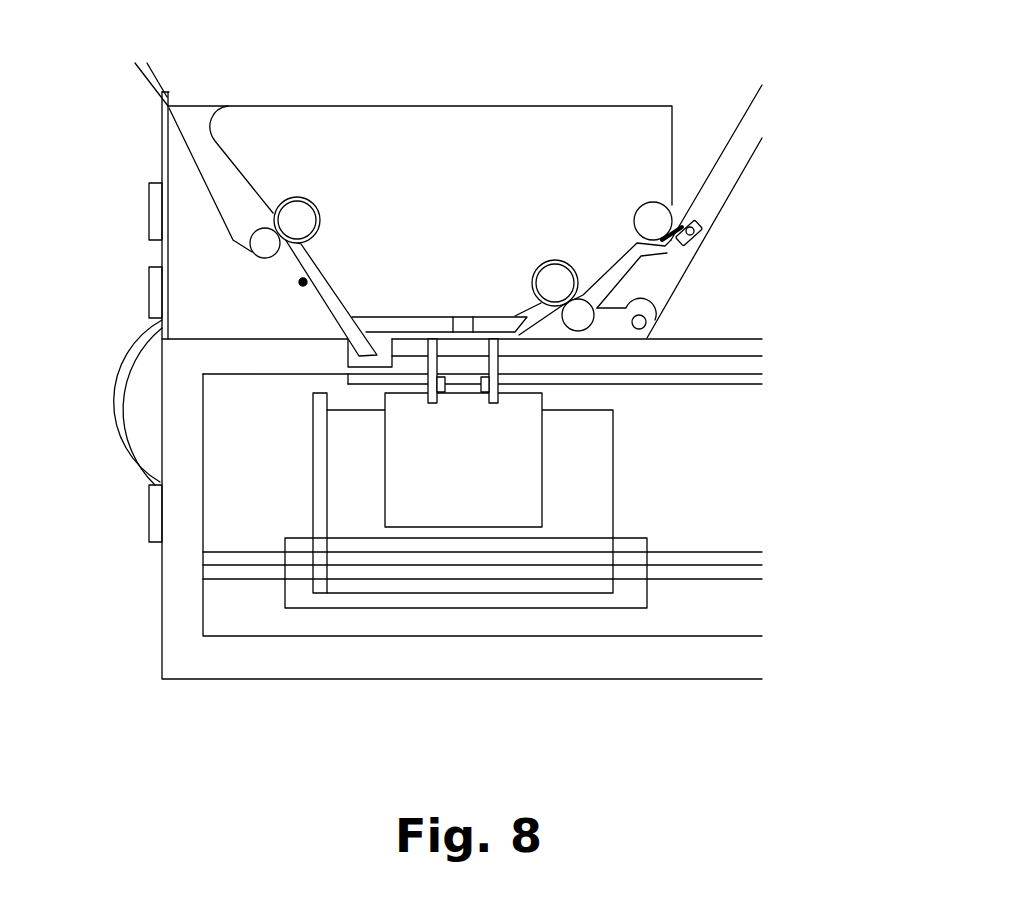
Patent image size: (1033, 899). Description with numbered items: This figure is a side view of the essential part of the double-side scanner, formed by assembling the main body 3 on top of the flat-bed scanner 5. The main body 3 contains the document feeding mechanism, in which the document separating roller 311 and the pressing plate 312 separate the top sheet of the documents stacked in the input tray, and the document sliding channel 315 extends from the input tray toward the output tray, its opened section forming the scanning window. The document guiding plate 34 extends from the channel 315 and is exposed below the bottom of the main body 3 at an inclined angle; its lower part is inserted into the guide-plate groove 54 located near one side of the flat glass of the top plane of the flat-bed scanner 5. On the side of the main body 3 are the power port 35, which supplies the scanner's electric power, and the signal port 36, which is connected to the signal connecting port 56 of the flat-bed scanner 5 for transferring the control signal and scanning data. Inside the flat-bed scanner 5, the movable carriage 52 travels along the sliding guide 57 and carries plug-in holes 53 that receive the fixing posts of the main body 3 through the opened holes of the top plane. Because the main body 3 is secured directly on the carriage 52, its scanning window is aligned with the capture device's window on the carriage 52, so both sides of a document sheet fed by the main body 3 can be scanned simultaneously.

The main body 3 is at (423, 88).
The document separating roller 311 is at (647, 213).
The pressing plate 312 is at (683, 240).
The document sliding channel 315 is at (404, 333).
The document guiding plate 34 is at (330, 321).
The power port 35 is at (157, 203).
The signal port 36 is at (155, 290).
The flat-bed scanner 5 is at (409, 407).
The movable carriage 52 is at (600, 467).
The plug-in holes 53 is at (495, 403).
The guide-plate groove 54 is at (347, 361).
The signal connecting port 56 is at (157, 505).
The sliding guide 57 is at (730, 560).